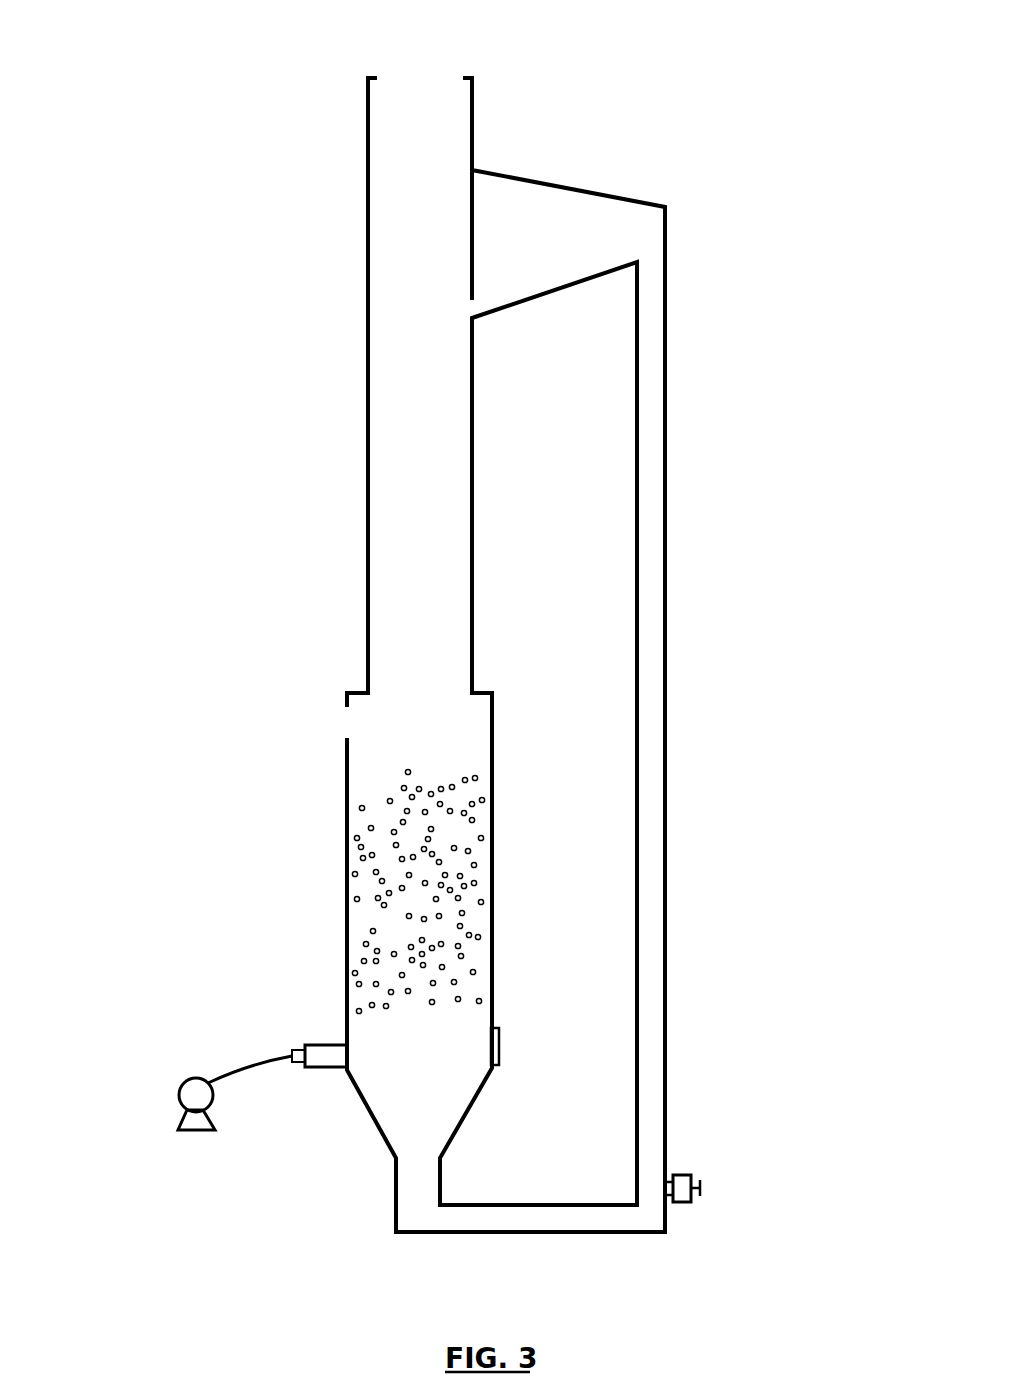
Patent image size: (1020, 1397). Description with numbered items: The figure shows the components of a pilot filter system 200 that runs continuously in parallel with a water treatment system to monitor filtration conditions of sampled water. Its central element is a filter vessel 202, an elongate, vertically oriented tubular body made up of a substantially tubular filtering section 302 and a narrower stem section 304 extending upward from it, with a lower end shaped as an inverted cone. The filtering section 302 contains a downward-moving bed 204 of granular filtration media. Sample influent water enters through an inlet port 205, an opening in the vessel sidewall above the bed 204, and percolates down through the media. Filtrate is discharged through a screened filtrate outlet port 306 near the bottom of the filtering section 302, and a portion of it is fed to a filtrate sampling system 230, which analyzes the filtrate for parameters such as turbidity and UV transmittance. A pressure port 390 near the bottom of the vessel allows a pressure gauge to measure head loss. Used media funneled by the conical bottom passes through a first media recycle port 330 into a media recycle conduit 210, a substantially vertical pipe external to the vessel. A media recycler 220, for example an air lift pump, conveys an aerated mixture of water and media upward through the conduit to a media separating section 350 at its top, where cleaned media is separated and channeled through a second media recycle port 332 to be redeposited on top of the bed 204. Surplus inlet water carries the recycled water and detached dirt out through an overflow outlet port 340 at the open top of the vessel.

The pilot filter system 200 is at (476, 659).
The filter vessel 202 is at (363, 465).
The bed of filtration media 204 is at (460, 892).
The inlet port 205 is at (348, 725).
The media recycle conduit 210 is at (658, 620).
The media recycler 220 is at (703, 1189).
The filtrate sampling system 230 is at (193, 1132).
The filtering section 302 is at (497, 700).
The stem section 304 is at (473, 378).
The filtrate outlet port 306 is at (335, 1040).
The first media recycle port 330 is at (417, 1212).
The second media recycle port 332 is at (493, 217).
The overflow outlet port 340 is at (417, 80).
The media separating section 350 is at (623, 233).
The pressure port 390 is at (493, 1040).